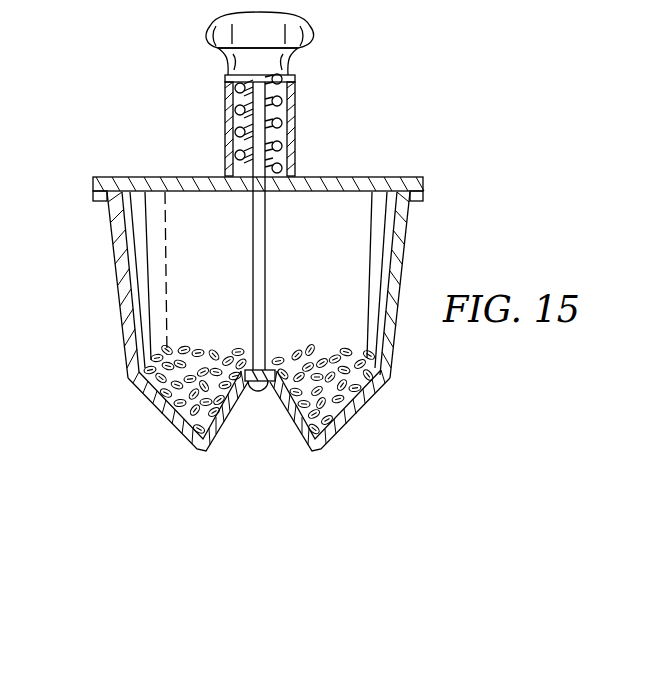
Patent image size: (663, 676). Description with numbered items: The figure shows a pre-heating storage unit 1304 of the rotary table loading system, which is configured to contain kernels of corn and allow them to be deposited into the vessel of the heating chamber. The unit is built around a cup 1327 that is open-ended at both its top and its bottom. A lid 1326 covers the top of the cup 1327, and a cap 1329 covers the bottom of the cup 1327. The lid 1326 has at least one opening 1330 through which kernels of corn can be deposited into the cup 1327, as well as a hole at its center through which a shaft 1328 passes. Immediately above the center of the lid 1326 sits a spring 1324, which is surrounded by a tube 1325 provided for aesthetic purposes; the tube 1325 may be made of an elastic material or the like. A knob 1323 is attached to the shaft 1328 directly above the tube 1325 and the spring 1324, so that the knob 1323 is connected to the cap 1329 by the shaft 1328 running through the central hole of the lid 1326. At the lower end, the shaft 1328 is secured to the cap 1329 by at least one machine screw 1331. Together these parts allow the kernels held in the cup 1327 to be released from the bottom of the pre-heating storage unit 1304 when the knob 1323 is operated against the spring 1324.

The pre-heating storage unit 1304 is at (376, 62).
The knob 1323 is at (214, 40).
The spring 1324 is at (296, 166).
The tube 1325 is at (226, 112).
The lid 1326 is at (133, 177).
The cup 1327 is at (122, 326).
The shaft 1328 is at (252, 280).
The cap 1329 is at (306, 442).
The opening 1330 is at (372, 177).
The machine screw 1331 is at (258, 392).